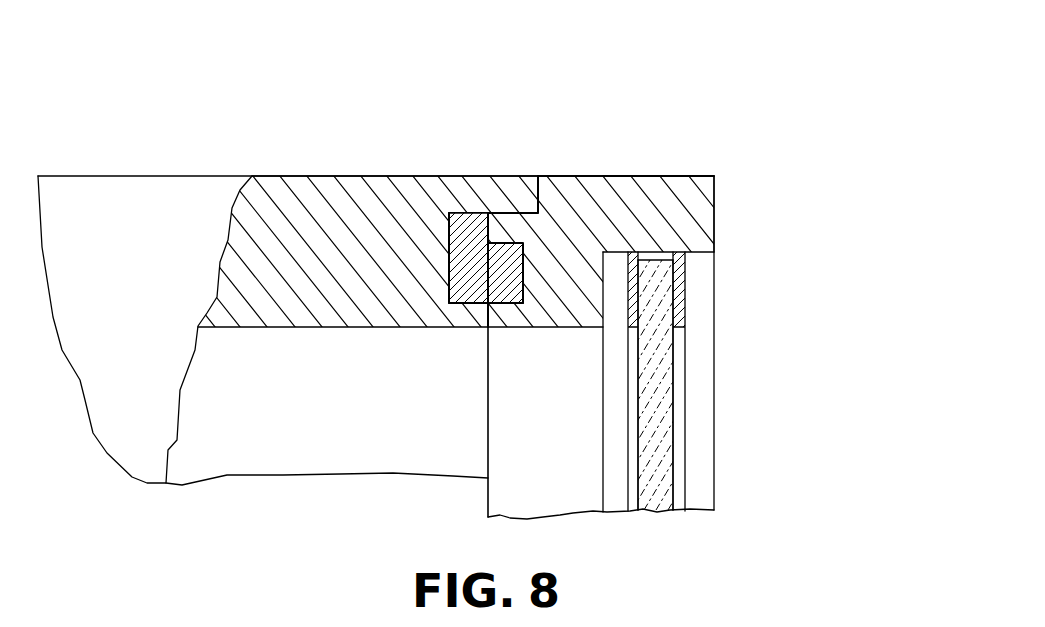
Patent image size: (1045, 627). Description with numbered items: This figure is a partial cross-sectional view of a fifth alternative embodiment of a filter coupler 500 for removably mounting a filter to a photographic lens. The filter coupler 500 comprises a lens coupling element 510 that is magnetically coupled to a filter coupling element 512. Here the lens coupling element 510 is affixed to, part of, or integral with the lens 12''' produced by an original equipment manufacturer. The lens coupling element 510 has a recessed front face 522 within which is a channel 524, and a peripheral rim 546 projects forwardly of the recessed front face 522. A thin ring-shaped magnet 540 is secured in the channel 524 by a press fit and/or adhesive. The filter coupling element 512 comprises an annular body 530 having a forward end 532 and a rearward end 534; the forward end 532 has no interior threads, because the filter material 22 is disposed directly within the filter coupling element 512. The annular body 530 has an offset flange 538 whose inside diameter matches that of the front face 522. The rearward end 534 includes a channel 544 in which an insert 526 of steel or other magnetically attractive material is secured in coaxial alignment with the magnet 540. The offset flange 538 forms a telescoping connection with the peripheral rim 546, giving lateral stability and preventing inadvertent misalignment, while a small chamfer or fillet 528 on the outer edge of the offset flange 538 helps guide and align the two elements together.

The lens 12''' is at (376, 276).
The filter coupler 500 is at (515, 86).
The lens coupling element 510 is at (363, 177).
The filter coupling element 512 is at (609, 177).
The annular body 530 is at (647, 176).
The forward end 532 is at (714, 200).
The peripheral rim 546 is at (528, 180).
The magnet 540 is at (449, 303).
The channel 524 is at (448, 250).
The recessed front face 522 is at (490, 303).
The chamfer or fillet 528 is at (490, 213).
The offset flange 538 is at (510, 213).
The rearward end 534 is at (493, 303).
The insert 526 is at (507, 305).
The channel 544 is at (523, 305).
The filter material 22 is at (665, 505).